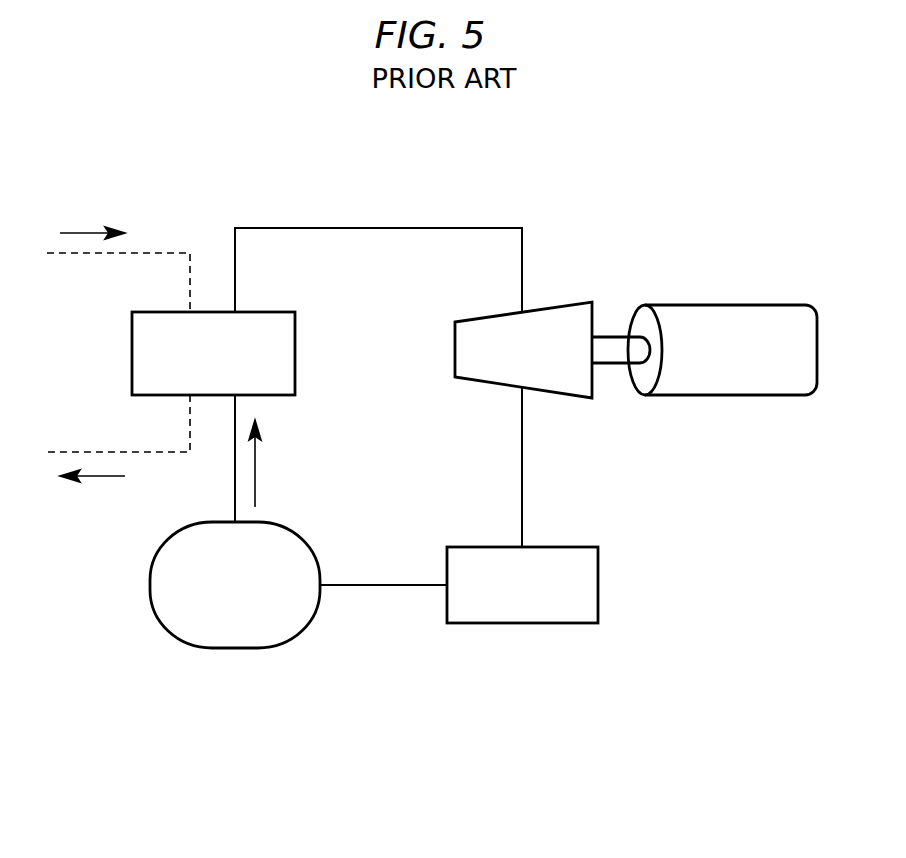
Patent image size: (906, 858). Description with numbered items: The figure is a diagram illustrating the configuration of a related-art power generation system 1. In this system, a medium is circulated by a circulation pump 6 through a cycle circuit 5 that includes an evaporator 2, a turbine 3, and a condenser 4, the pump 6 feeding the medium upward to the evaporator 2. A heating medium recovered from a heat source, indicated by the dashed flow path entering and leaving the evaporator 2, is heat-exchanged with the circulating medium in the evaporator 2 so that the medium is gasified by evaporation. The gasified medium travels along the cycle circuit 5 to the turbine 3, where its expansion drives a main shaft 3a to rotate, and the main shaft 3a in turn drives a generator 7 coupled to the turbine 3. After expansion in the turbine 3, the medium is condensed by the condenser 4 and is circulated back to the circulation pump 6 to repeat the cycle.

The power generation system 1 is at (705, 180).
The evaporator 2 is at (295, 343).
The turbine 3 is at (495, 312).
The main shaft 3a is at (608, 362).
The condenser 4 is at (557, 623).
The cycle circuit 5 is at (323, 228).
The circulation pump 6 is at (180, 635).
The generator 7 is at (675, 305).